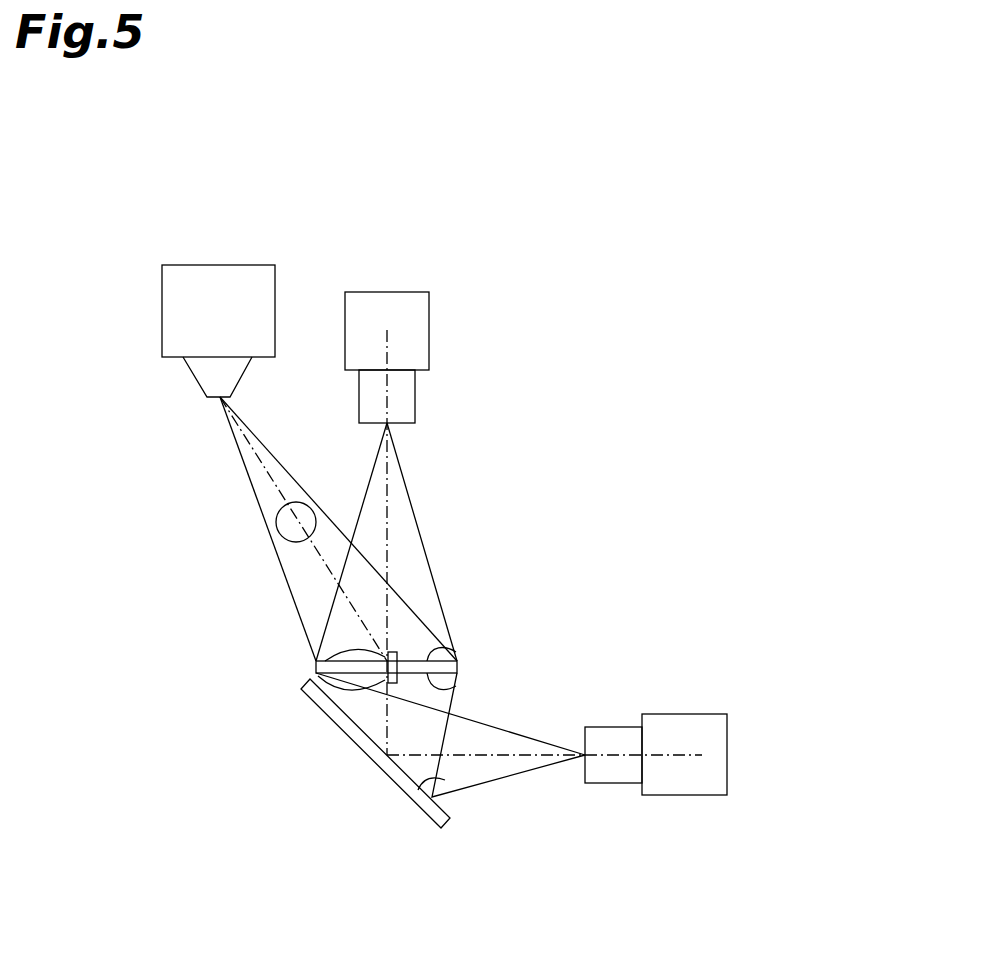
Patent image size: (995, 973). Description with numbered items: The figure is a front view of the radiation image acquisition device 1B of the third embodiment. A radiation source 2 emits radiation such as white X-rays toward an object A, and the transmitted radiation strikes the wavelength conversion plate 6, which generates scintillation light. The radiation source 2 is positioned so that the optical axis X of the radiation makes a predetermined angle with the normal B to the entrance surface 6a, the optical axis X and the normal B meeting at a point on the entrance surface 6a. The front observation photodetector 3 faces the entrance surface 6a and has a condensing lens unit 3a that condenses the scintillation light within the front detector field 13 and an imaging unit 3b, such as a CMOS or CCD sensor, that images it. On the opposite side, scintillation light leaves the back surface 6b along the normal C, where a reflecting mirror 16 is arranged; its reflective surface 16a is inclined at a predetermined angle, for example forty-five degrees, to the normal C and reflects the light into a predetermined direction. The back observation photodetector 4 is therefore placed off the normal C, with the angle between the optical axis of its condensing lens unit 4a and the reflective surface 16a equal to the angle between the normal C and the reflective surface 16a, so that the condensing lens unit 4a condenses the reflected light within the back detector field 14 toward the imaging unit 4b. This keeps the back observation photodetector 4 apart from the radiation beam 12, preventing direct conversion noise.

The radiation image acquisition device 1B is at (591, 264).
The radiation source 2 is at (218, 265).
The front observation photodetector 3 is at (430, 310).
The condensing lens unit 3a is at (415, 398).
The imaging unit 3b is at (429, 335).
The back observation photodetector 4 is at (694, 714).
The condensing lens unit 4a is at (619, 727).
The imaging unit 4b is at (686, 714).
The wavelength conversion plate 6 is at (427, 654).
The entrance surface 6a is at (427, 661).
The back surface 6b is at (456, 686).
The radiation beam 12 is at (300, 600).
The front detector field 13 is at (428, 592).
The back detector field 14 is at (493, 742).
The reflecting mirror 16 is at (425, 800).
The reflective surface 16a is at (445, 780).
The optical axis of the radiation X is at (268, 469).
The object A is at (300, 541).
The normal to the entrance surface B is at (388, 530).
The normal to the back surface C is at (372, 718).